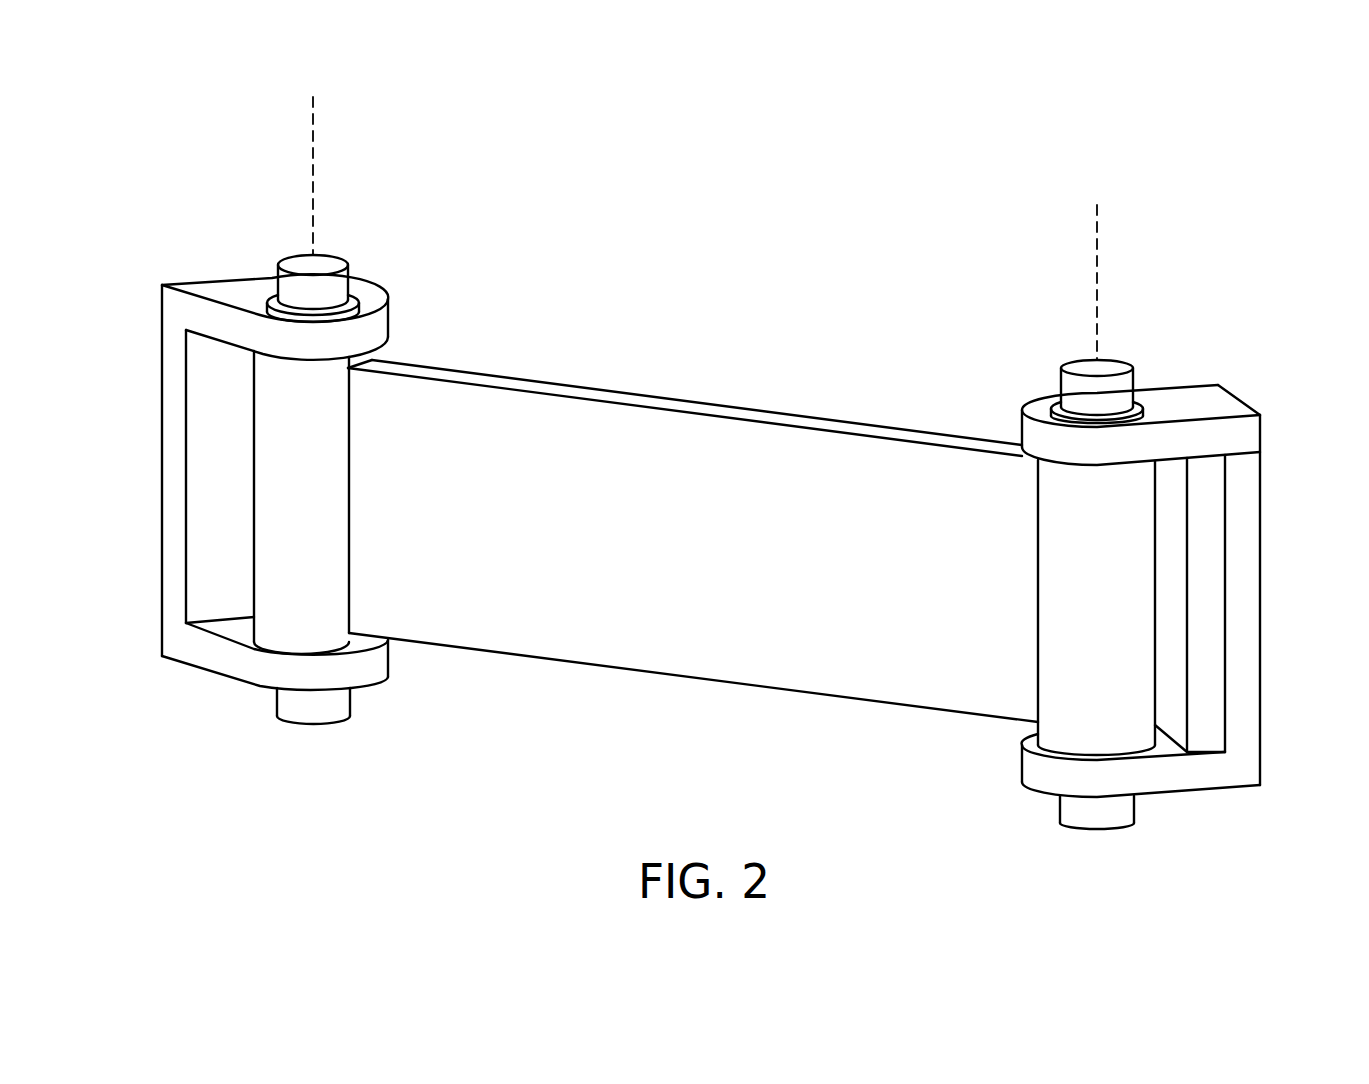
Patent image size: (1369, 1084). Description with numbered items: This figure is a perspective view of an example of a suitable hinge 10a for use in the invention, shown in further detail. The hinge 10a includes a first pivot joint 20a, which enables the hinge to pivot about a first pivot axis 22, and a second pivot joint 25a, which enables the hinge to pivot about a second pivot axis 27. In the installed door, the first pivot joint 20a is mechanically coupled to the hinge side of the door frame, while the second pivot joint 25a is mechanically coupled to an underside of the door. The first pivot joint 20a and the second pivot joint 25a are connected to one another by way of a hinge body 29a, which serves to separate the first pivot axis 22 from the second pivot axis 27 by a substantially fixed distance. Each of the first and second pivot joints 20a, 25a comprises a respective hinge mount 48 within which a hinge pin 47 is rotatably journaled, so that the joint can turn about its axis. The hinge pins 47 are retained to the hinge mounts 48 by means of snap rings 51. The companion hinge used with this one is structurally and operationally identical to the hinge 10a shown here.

The hinge 10a is at (837, 322).
The hinge mount 48 is at (177, 315).
The first pivot joint 20a is at (287, 493).
The second pivot joint 25a is at (1127, 608).
The hinge body 29a is at (713, 552).
The hinge pin 47 is at (326, 717).
The snap ring 51 is at (358, 292).
The first pivot axis 22 is at (313, 123).
The second pivot axis 27 is at (1098, 230).